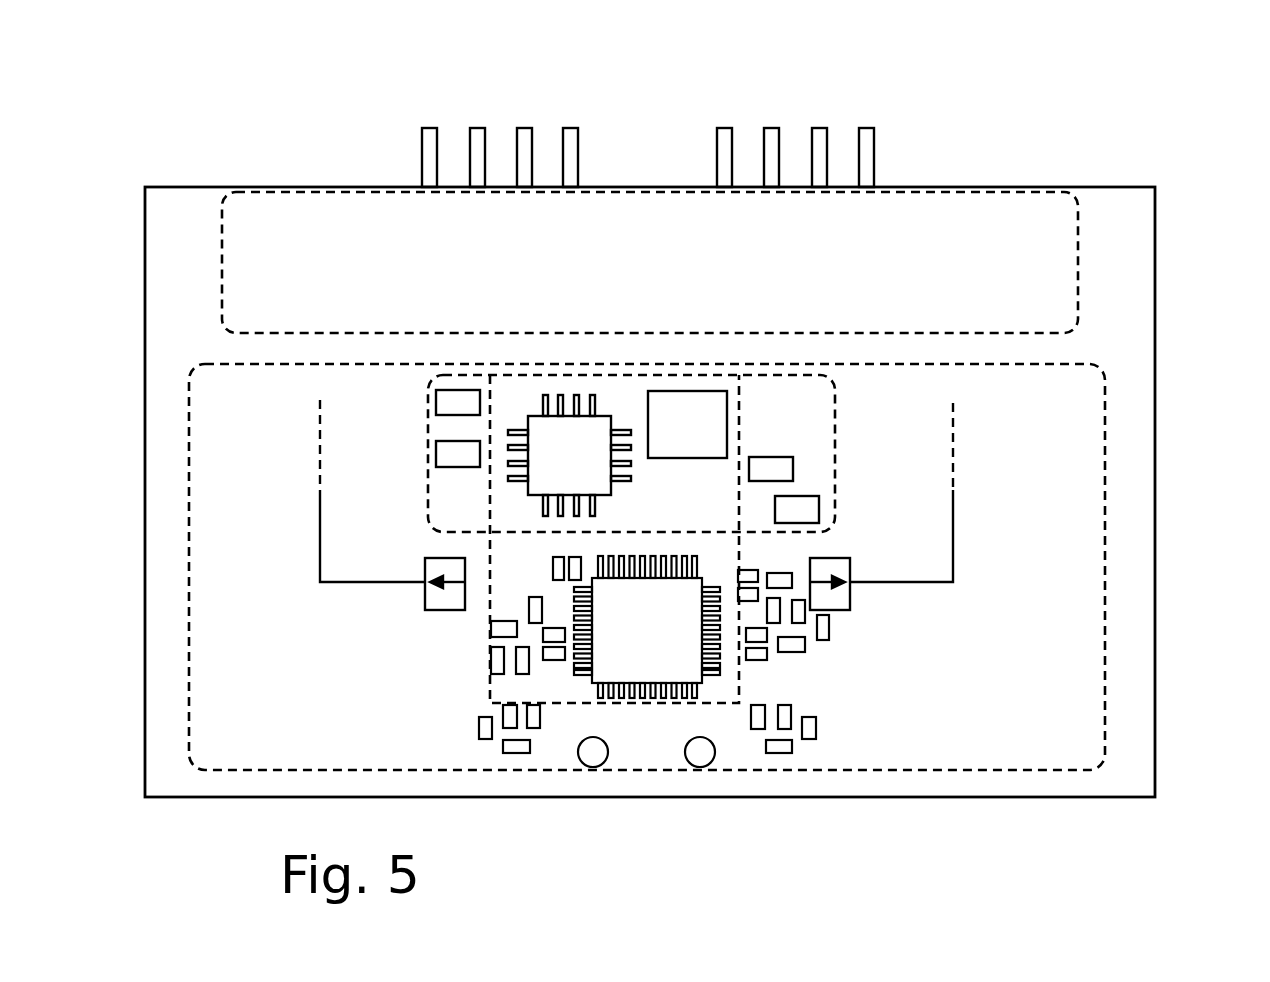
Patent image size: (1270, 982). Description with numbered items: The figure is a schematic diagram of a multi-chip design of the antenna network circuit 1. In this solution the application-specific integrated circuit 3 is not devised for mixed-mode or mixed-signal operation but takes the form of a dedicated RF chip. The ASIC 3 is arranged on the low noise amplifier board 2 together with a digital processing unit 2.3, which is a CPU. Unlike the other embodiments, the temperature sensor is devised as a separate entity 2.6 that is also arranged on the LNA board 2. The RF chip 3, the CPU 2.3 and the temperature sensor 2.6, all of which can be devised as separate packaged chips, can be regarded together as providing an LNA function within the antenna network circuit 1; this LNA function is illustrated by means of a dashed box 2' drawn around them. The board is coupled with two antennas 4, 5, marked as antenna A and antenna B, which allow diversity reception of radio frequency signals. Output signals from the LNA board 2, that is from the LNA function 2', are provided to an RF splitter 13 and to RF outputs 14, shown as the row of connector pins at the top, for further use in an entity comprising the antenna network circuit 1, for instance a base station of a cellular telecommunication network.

The antenna network circuit 1 is at (1170, 560).
The RF splitter 13 is at (1078, 266).
The RF outputs 14 is at (746, 121).
The low noise amplifier board 2 is at (647, 567).
The LNA function 2' is at (557, 553).
The digital processing unit 2.3 is at (600, 432).
The temperature sensor 2.6 is at (706, 402).
The application-specific integrated circuit 3 is at (688, 583).
The antenna 4 is at (593, 752).
The antenna 5 is at (700, 752).